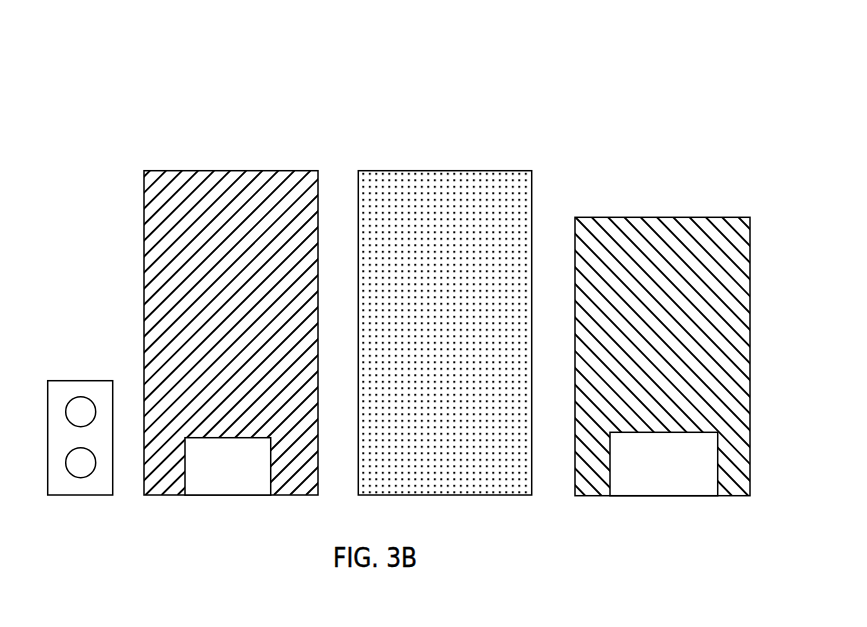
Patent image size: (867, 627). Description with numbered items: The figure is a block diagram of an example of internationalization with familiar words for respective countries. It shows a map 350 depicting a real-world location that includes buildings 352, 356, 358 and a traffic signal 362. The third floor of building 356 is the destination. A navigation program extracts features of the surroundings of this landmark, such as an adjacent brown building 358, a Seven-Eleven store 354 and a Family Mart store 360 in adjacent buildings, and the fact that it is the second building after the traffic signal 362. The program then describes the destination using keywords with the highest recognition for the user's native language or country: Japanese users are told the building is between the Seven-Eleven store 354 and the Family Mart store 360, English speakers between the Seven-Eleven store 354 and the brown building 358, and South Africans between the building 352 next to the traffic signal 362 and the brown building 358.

The map 350 is at (727, 109).
The building 352 is at (181, 170).
The store 354 is at (202, 495).
The building 356 is at (400, 170).
The building 358 is at (618, 217).
The store 360 is at (638, 496).
The traffic signal 362 is at (58, 380).